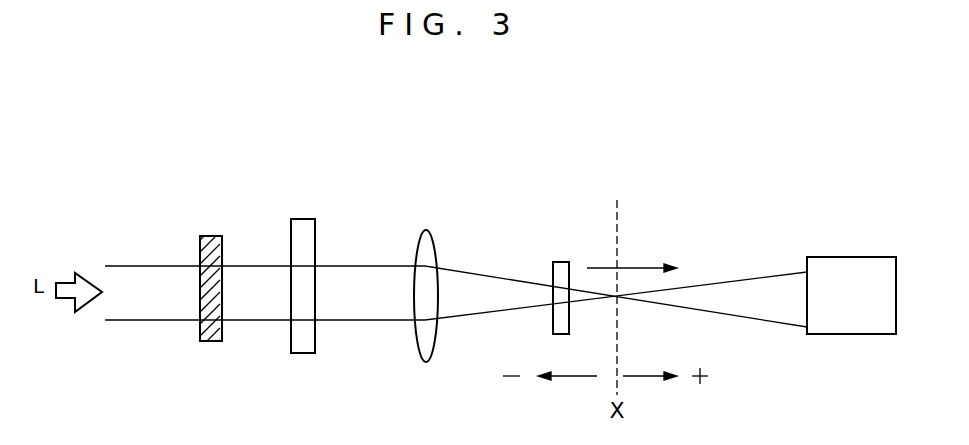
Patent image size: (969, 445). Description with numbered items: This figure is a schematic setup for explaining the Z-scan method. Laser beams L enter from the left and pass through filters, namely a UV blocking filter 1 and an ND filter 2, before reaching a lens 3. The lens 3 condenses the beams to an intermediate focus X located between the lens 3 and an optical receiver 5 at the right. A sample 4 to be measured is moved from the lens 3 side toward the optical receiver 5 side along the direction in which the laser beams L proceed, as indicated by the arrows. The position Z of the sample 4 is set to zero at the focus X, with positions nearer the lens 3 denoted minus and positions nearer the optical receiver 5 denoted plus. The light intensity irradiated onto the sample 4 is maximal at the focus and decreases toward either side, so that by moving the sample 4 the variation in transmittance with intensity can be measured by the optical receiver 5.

The UV blocking filter 1 is at (211, 236).
The ND filter 2 is at (302, 219).
The lens 3 is at (429, 232).
The sample 4 is at (561, 262).
The optical receiver 5 is at (827, 257).